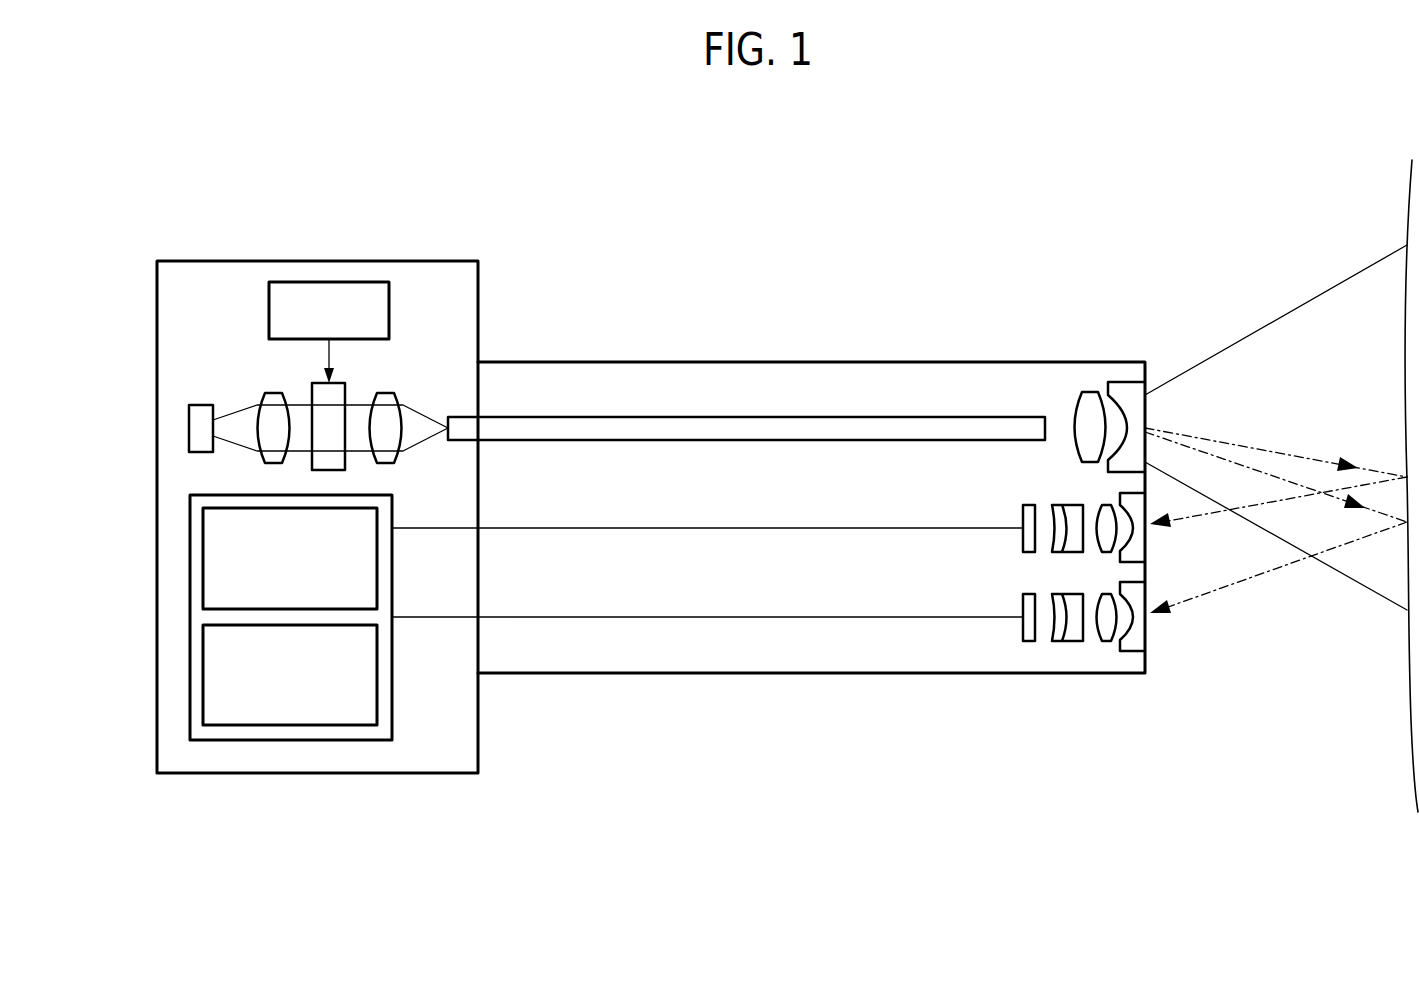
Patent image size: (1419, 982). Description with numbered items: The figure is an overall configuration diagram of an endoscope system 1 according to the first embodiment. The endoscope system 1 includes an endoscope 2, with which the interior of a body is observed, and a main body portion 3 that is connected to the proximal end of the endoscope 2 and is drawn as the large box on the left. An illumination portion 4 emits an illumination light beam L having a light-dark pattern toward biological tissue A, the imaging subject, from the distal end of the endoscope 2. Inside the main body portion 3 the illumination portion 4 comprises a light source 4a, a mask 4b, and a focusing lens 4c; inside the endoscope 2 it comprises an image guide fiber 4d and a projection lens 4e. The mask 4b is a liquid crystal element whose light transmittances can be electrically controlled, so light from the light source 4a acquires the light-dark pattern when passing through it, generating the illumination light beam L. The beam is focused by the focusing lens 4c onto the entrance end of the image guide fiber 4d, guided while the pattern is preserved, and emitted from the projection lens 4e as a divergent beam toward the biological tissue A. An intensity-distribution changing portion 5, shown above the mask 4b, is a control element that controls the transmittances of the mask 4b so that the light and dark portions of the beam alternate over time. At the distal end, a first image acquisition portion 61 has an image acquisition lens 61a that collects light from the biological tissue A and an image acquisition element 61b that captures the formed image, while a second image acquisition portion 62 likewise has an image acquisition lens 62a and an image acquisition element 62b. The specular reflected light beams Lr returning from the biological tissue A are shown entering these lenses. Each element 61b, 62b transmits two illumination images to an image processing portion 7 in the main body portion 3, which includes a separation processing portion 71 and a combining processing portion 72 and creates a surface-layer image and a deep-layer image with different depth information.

The endoscope system 1 is at (897, 193).
The endoscope 2 is at (692, 362).
The main body portion 3 is at (418, 261).
The illumination portion 4 is at (237, 358).
The light source 4a is at (189, 426).
The mask 4b is at (345, 392).
The focusing lens 4c is at (398, 455).
The image guide fiber 4d is at (925, 417).
The projection lens 4e is at (1100, 360).
The intensity-distribution changing portion 5 is at (320, 282).
The image processing portion 7 is at (282, 741).
The separation processing portion 71 is at (203, 550).
The combining processing portion 72 is at (203, 670).
The first image acquisition portion 61 is at (974, 510).
The image acquisition lens 61a is at (1074, 492).
The image acquisition element 61b is at (1028, 504).
The second image acquisition portion 62 is at (994, 600).
The image acquisition lens 62a is at (1088, 669).
The image acquisition element 62b is at (1028, 642).
The illumination light beam L is at (1300, 306).
The specular reflected light beams Lr is at (1187, 517).
The biological tissue A is at (1413, 765).